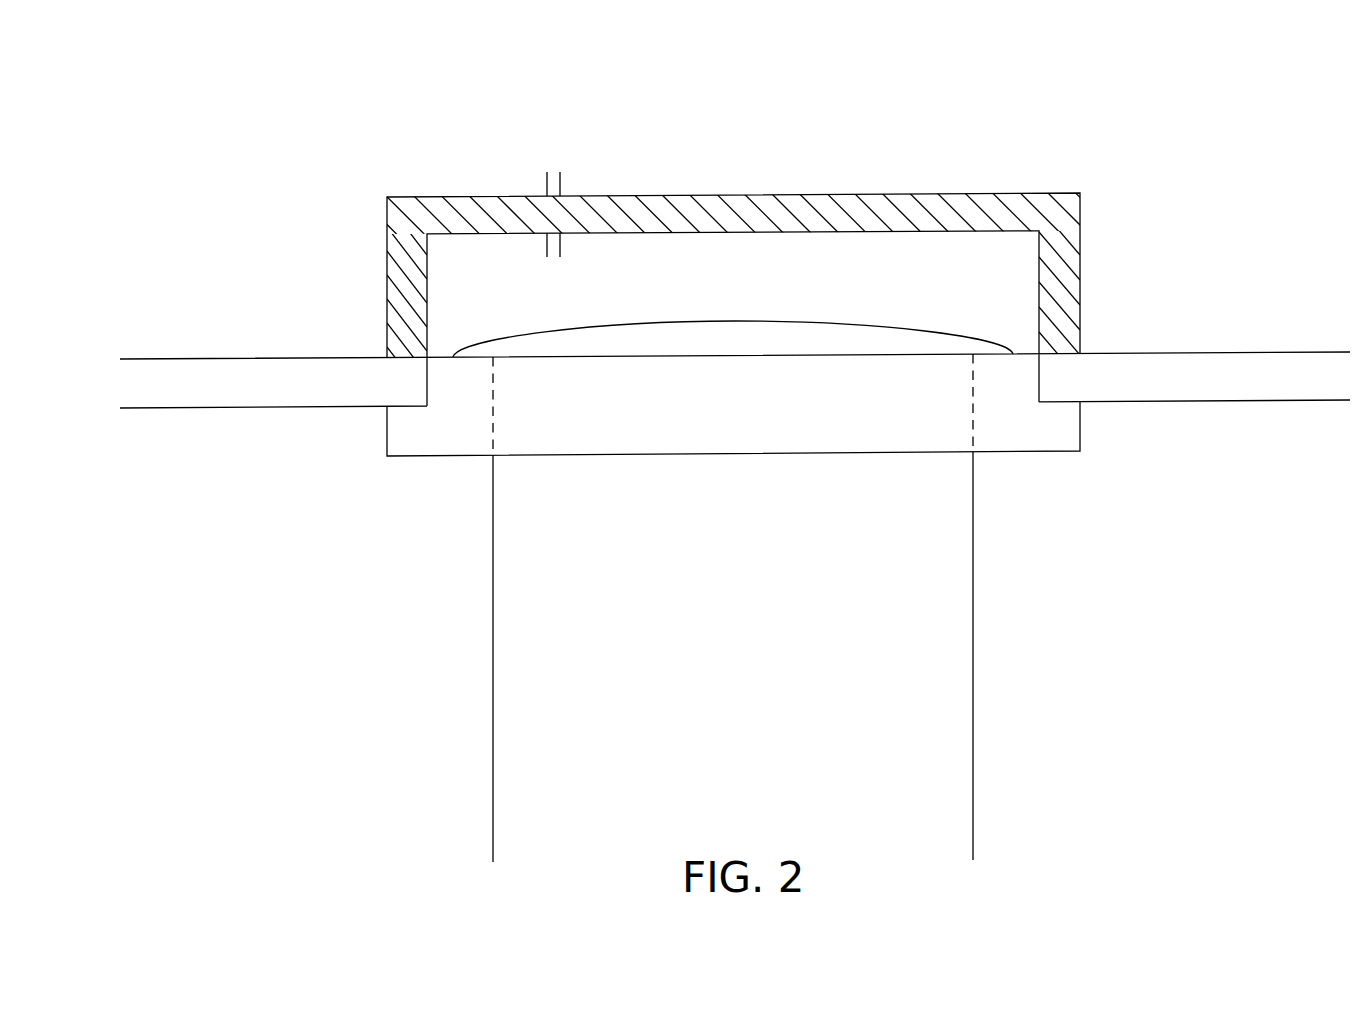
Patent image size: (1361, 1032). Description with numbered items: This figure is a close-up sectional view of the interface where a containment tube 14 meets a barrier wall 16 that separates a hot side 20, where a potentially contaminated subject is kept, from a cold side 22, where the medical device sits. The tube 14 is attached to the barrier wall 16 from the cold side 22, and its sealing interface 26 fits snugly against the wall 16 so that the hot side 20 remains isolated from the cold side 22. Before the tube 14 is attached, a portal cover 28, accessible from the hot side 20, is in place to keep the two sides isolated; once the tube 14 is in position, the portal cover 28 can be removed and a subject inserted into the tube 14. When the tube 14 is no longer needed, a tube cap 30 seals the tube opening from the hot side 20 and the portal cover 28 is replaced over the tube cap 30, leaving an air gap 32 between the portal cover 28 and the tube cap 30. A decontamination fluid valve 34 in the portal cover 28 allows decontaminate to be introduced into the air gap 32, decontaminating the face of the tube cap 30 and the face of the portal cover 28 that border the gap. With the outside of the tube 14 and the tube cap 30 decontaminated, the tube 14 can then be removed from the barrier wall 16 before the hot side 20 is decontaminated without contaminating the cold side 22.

The containment tube 14 is at (973, 600).
The barrier wall 16 is at (181, 359).
The hot side 20 is at (682, 57).
The cold side 22 is at (320, 751).
The sealing interface 26 is at (450, 456).
The portal cover 28 is at (827, 193).
The tube cap 30 is at (867, 322).
The air gap 32 is at (722, 291).
The decontamination fluid valve 34 is at (547, 185).